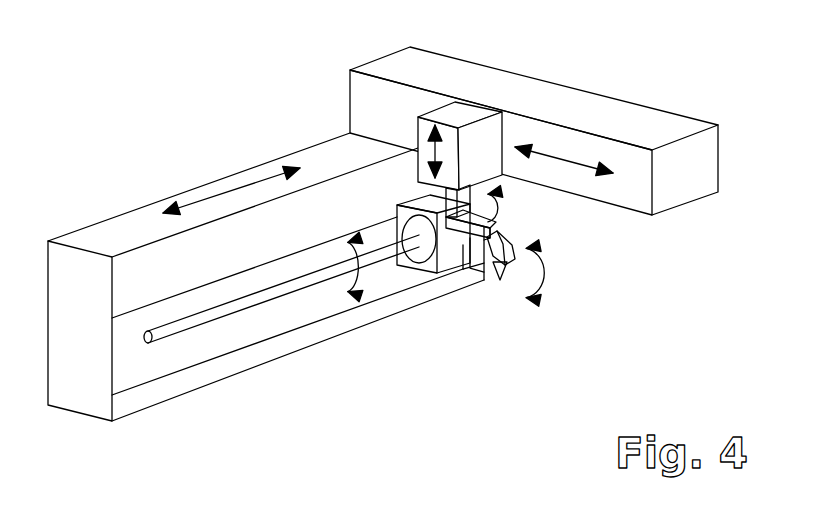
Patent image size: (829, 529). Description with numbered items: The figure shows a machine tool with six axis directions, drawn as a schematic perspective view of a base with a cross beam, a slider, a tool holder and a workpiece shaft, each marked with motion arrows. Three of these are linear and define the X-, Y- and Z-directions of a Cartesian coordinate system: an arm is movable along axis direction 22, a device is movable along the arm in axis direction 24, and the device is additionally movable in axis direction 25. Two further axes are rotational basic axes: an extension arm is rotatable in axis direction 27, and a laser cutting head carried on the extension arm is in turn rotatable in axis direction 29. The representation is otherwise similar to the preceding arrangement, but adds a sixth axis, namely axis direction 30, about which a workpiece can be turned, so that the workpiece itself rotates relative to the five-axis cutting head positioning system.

The axis direction 22 is at (238, 190).
The axis direction 24 is at (565, 158).
The axis direction 25 is at (418, 150).
The axis direction 27 is at (460, 240).
The axis direction 29 is at (553, 275).
The axis direction 30 is at (363, 283).